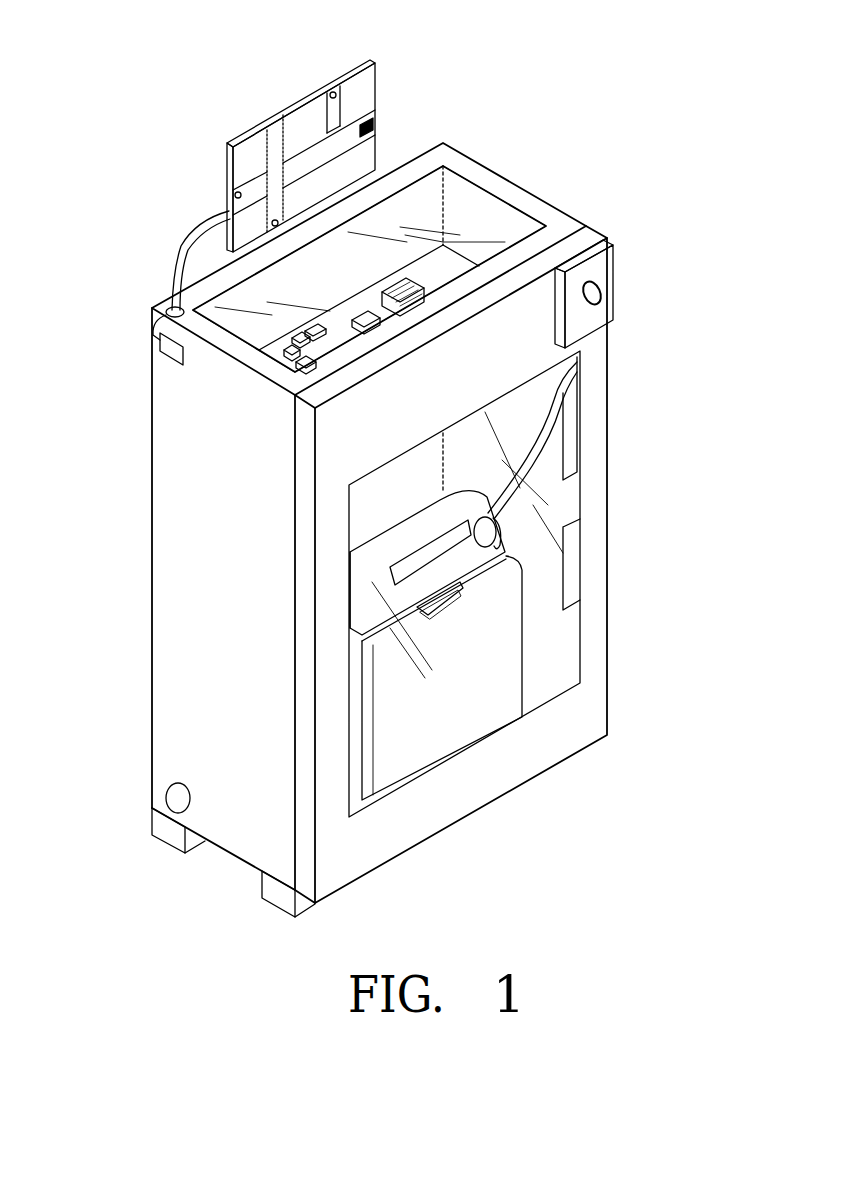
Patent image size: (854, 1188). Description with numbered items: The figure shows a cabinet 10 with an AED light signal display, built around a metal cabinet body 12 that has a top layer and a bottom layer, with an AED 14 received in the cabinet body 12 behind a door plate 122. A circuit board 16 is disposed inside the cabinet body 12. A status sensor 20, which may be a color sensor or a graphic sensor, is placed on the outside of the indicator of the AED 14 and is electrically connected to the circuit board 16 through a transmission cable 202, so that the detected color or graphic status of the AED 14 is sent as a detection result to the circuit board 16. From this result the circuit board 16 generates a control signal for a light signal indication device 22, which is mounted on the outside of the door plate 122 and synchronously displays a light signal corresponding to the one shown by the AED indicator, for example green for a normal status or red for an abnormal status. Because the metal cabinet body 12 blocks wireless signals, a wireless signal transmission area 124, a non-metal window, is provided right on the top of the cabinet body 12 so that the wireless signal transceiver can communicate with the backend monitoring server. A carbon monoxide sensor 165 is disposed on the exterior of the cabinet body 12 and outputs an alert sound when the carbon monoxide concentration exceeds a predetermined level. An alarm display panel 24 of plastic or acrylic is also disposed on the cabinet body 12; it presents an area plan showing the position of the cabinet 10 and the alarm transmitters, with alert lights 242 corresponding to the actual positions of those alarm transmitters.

The cabinet with an AED light signal display 10 is at (381, 464).
The cabinet body 12 is at (548, 200).
The AED 14 is at (523, 645).
The circuit board 16 is at (283, 352).
The status sensor 20 is at (492, 540).
The light signal indication device 22 is at (605, 272).
The alarm display panel 24 is at (273, 160).
The door plate 122 is at (598, 505).
The wireless signal transmission area 124 is at (423, 185).
The carbon monoxide sensor 165 is at (158, 350).
The transmission cable 202 is at (545, 418).
The alert lights 242 is at (275, 128).